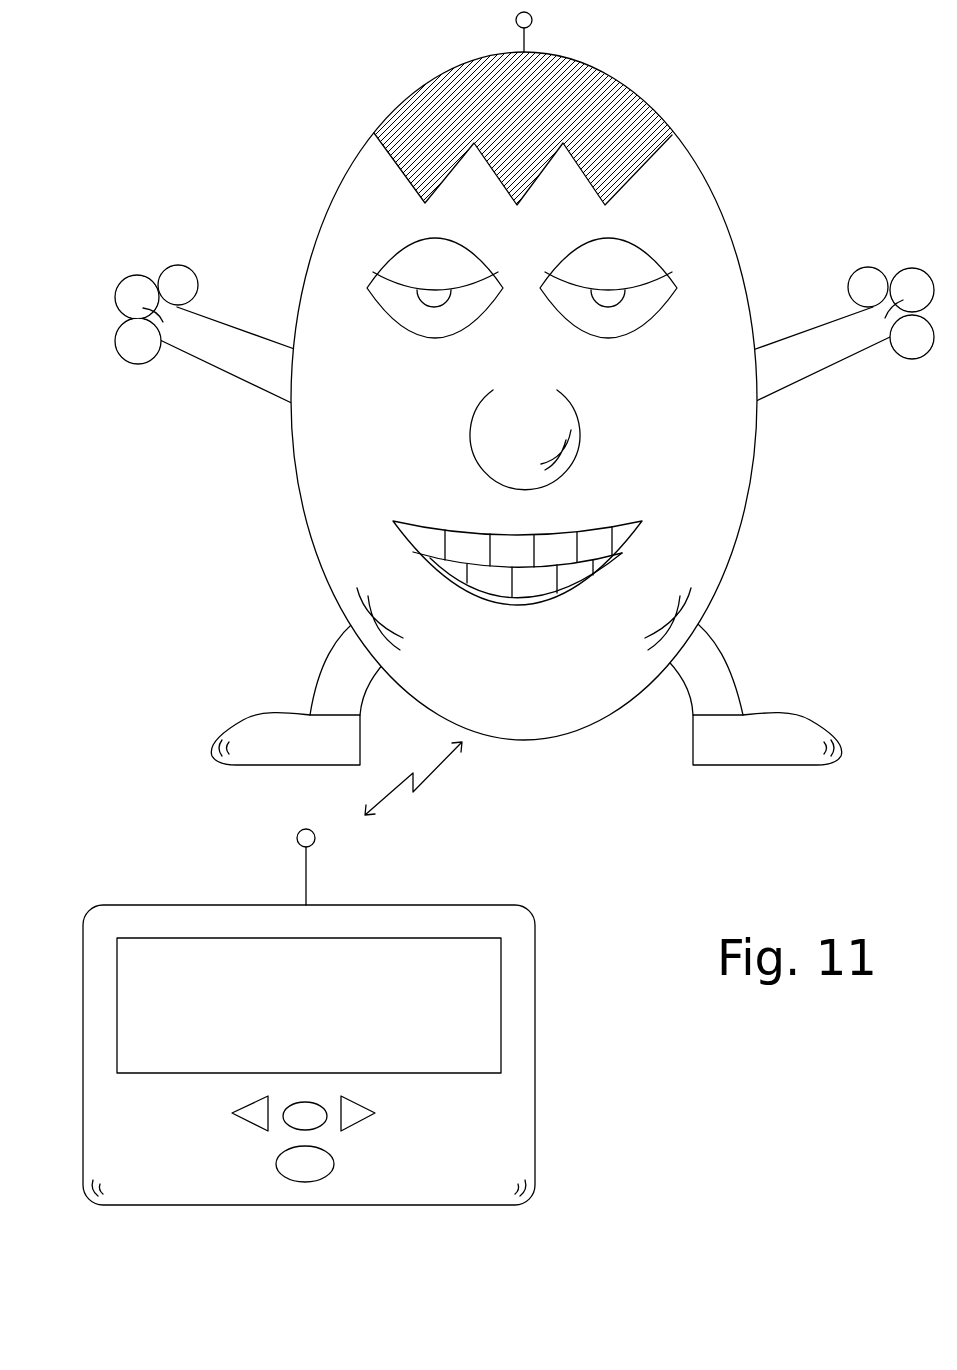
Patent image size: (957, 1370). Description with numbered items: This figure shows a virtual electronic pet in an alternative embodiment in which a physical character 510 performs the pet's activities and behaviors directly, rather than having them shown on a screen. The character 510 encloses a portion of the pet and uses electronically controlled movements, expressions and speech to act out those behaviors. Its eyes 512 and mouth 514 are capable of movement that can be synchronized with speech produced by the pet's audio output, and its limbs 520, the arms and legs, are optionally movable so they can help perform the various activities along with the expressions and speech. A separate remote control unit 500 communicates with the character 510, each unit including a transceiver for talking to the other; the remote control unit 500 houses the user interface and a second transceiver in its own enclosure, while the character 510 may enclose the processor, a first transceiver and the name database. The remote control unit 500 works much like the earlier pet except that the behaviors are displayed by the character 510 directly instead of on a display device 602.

The remote control unit 500 is at (367, 1017).
The character 510 is at (260, 493).
The eyes 512 is at (393, 257).
The mouth 514 is at (618, 560).
The limbs 520 is at (94, 330).
The display device 602 is at (399, 938).